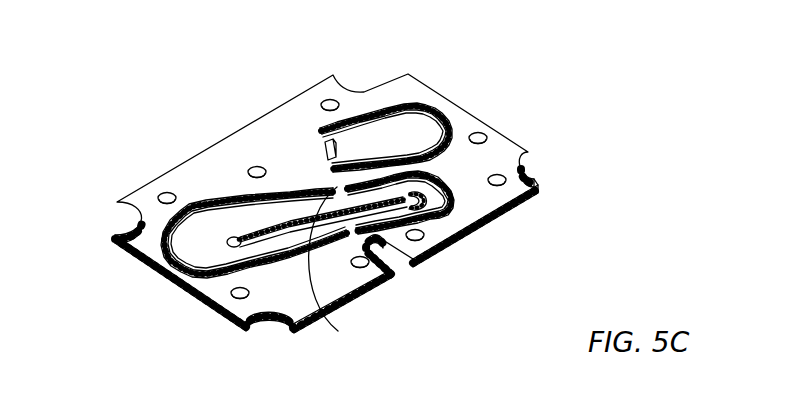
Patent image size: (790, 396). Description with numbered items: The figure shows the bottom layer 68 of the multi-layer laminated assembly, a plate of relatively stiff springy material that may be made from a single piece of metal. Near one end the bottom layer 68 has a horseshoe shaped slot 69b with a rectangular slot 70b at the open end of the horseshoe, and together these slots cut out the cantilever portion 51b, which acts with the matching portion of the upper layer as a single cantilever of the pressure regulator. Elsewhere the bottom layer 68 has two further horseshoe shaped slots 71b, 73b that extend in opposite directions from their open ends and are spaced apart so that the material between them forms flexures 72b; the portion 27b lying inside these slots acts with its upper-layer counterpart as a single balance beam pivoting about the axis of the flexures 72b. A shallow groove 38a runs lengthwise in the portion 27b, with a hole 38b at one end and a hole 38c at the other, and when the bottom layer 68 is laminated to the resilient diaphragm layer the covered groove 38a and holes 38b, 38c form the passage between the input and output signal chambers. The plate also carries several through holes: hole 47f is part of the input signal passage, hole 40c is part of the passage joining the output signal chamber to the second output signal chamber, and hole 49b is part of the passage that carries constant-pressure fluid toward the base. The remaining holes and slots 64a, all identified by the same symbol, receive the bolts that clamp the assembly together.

The bottom layer 68 is at (140, 272).
The holes and slots 64a is at (330, 99).
The hole 49b is at (506, 180).
The hole 47f is at (364, 269).
The hole 40c is at (405, 252).
The rectangular slot 70b is at (325, 145).
The horseshoe shaped slot 69b is at (372, 112).
The cantilever portion 51b is at (400, 125).
The horseshoe shaped slot 73b is at (227, 279).
The portion of balance beam 27b is at (205, 252).
The hole 38b is at (427, 220).
The horseshoe shaped slot 71b is at (440, 198).
The shallow groove 38a is at (283, 218).
The hole 38c is at (223, 238).
The flexures 72b is at (339, 274).